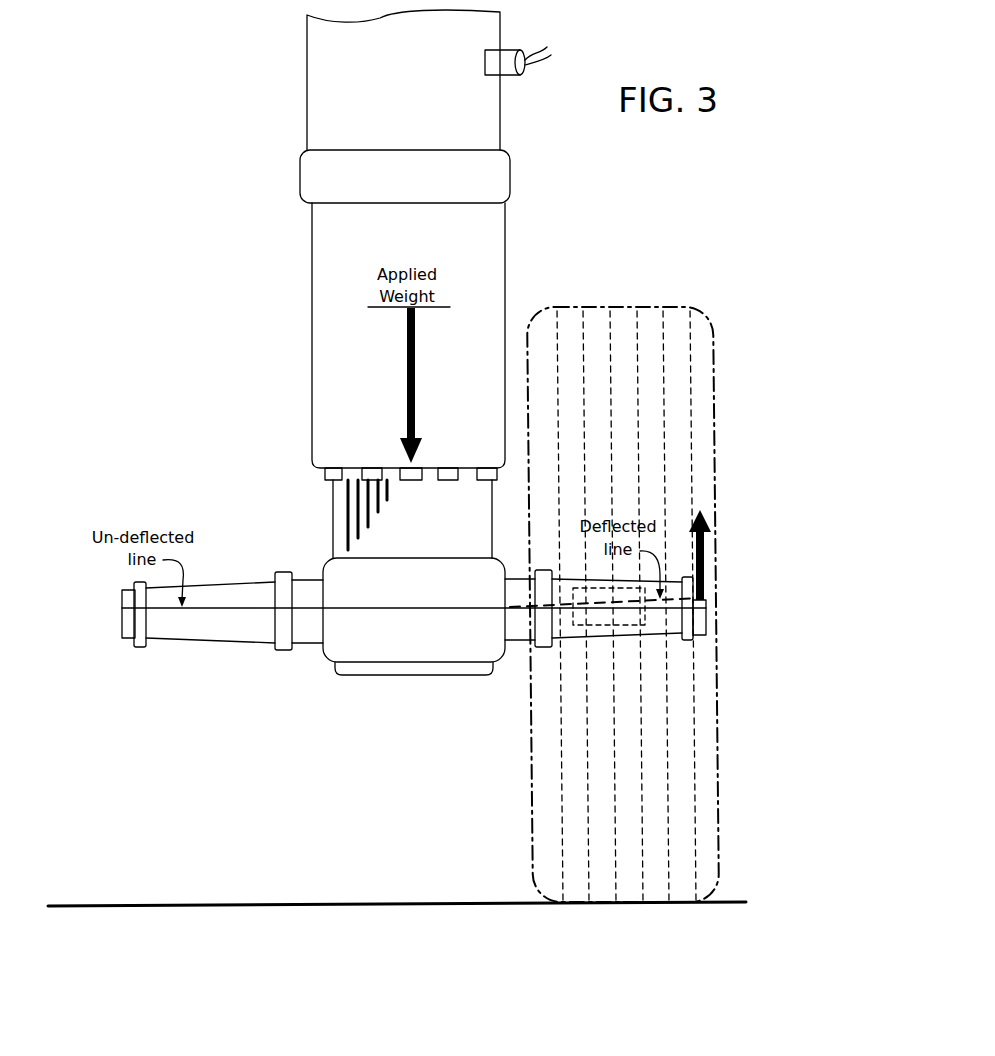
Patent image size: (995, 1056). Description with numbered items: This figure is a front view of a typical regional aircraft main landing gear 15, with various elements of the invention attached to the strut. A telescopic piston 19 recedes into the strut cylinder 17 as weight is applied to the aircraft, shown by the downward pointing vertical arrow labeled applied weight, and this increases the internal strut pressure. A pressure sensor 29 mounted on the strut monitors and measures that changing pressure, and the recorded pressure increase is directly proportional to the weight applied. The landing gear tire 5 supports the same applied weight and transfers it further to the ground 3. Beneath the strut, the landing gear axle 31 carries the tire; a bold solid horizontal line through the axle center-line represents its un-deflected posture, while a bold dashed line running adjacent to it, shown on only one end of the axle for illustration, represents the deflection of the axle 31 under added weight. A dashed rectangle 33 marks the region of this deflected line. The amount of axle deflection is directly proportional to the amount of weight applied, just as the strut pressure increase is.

The ground 3 is at (243, 904).
The landing gear tire 5 is at (697, 397).
The main landing gear 15 is at (310, 181).
The strut cylinder 17 is at (487, 277).
The telescopic piston 19 is at (333, 530).
The pressure sensor 29 is at (507, 71).
The landing gear axle 31 is at (180, 635).
The deflection sensing region 33 is at (597, 618).